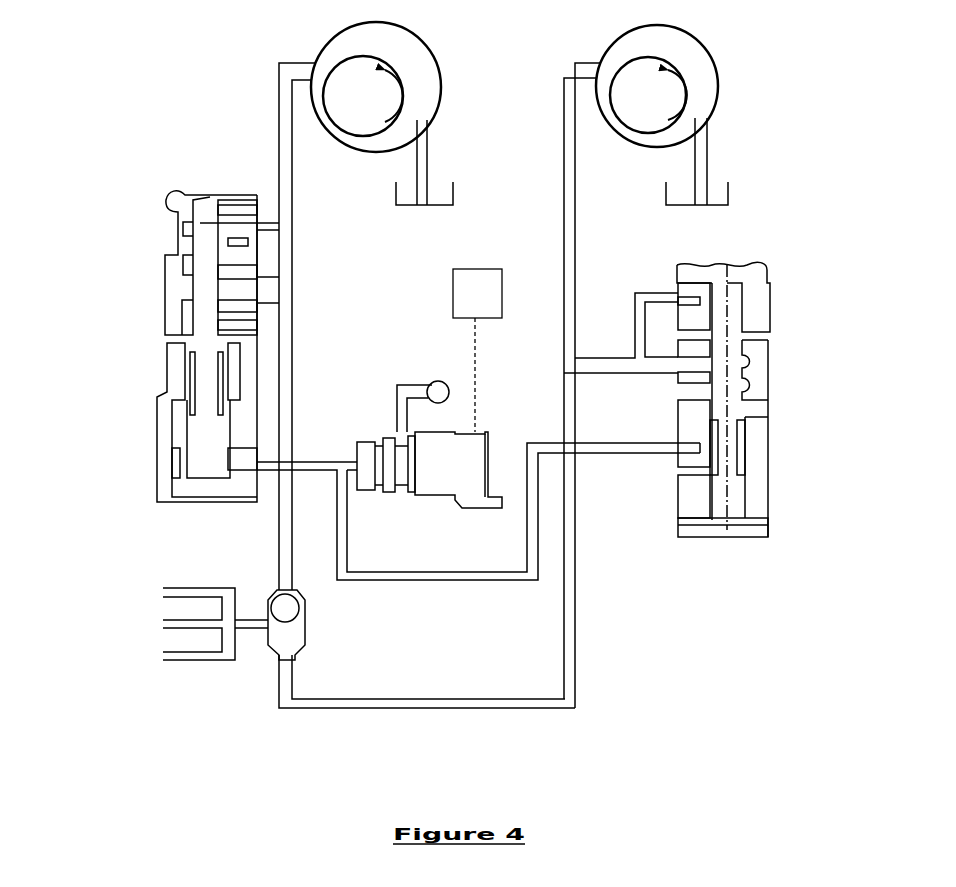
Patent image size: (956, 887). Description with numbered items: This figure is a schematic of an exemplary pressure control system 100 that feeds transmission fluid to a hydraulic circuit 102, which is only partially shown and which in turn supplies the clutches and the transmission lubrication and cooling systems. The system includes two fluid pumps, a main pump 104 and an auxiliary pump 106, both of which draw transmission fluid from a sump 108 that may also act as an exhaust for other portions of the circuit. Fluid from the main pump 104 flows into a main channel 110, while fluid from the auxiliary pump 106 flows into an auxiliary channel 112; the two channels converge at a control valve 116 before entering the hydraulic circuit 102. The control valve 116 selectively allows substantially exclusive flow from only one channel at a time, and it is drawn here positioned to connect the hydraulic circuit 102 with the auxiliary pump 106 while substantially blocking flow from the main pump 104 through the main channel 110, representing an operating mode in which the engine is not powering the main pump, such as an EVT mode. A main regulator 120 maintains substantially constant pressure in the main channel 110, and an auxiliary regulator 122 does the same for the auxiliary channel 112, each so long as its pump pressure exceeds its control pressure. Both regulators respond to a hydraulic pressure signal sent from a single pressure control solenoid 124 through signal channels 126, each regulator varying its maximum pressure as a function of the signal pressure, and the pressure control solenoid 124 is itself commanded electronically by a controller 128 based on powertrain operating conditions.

The pressure control system 100 is at (150, 92).
The hydraulic circuit 102 is at (202, 672).
The main pump 104 is at (437, 62).
The auxiliary pump 106 is at (712, 60).
The sump 108 is at (455, 196).
The main channel 110 is at (293, 340).
The auxiliary channel 112 is at (563, 350).
The control valve 116 is at (310, 618).
The main regulator 120 is at (140, 297).
The auxiliary regulator 122 is at (664, 284).
The pressure control solenoid 124 is at (380, 425).
The signal channels 126 is at (318, 460).
The controller 128 is at (453, 297).